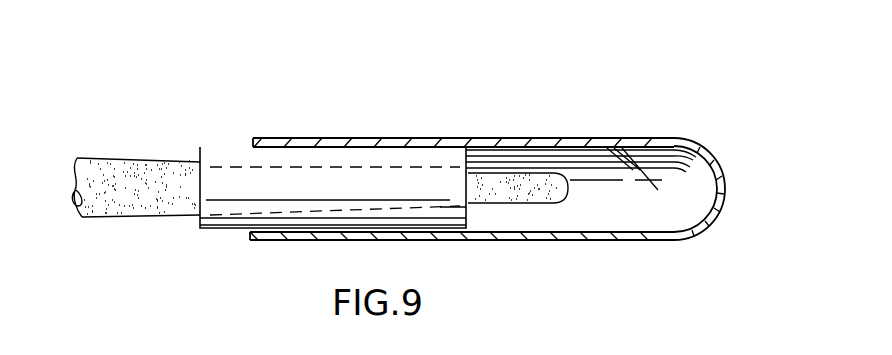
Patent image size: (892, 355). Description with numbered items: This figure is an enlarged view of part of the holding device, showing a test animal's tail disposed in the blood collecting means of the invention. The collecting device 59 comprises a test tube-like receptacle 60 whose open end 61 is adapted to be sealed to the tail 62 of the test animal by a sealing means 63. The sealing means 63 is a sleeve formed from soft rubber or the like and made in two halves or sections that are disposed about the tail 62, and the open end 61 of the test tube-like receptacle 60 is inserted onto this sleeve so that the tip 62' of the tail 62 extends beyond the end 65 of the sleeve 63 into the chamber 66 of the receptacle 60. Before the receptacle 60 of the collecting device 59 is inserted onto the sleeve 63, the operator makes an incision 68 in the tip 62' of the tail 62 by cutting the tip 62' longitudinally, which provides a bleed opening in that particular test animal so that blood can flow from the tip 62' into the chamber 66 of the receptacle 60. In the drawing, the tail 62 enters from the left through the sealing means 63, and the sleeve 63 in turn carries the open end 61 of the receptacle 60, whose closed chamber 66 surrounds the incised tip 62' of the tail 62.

The collecting device 59 is at (461, 113).
The test tube-like receptacle 60 is at (647, 138).
The open end 61 is at (249, 142).
The tail 62 is at (136, 160).
The tip of the tail 62' is at (551, 229).
The sealing means 63 is at (208, 230).
The end of the sleeve 65 is at (467, 155).
The chamber 66 is at (683, 173).
The incision 68 is at (540, 189).